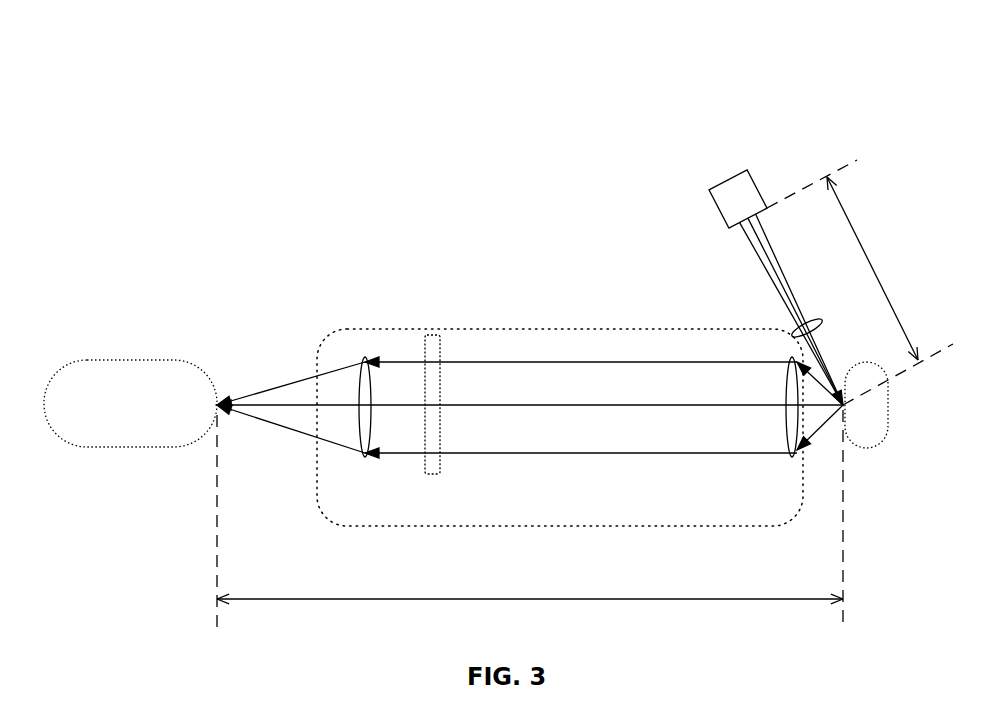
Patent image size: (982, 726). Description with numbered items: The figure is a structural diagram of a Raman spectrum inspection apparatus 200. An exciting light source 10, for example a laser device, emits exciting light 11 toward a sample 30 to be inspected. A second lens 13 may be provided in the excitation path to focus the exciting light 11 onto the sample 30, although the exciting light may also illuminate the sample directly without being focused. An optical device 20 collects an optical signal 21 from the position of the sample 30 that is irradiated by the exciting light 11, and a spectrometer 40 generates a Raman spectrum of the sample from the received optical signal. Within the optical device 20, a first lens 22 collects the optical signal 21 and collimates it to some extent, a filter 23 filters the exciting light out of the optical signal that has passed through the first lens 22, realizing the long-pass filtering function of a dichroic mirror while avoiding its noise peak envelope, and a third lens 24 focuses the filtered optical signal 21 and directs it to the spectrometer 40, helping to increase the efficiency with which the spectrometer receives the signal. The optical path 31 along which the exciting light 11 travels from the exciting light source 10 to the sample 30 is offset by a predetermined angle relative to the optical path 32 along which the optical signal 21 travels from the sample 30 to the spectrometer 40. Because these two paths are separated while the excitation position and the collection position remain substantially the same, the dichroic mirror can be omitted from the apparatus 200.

The Raman spectrum inspection apparatus 200 is at (573, 49).
The exciting light source 10 is at (729, 179).
The exciting light 11 is at (780, 303).
The second lens 13 is at (817, 325).
The optical device 20 is at (535, 338).
The optical signal 21 is at (665, 430).
The first lens 22 is at (788, 440).
The filter 23 is at (432, 415).
The third lens 24 is at (360, 430).
The sample to be inspected 30 is at (888, 427).
The optical path 31 is at (860, 282).
The optical path 32 is at (530, 519).
The spectrometer 40 is at (180, 360).